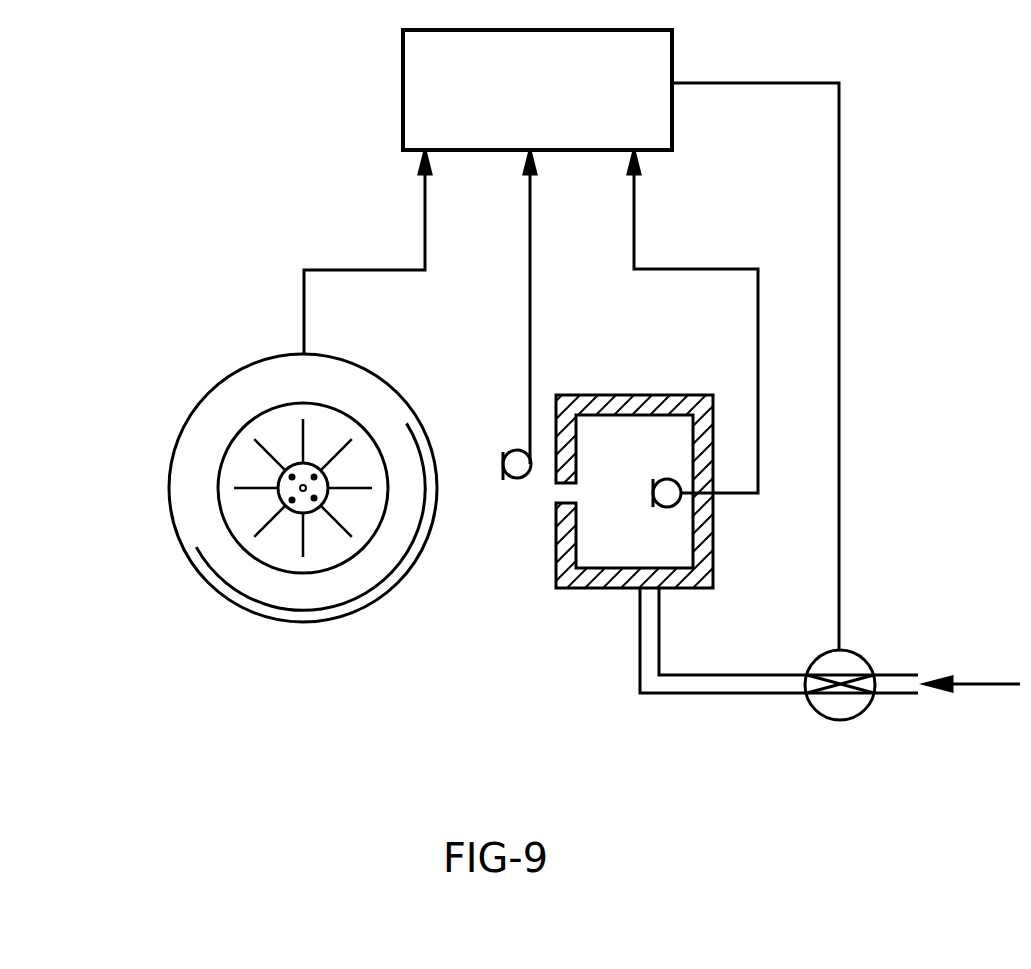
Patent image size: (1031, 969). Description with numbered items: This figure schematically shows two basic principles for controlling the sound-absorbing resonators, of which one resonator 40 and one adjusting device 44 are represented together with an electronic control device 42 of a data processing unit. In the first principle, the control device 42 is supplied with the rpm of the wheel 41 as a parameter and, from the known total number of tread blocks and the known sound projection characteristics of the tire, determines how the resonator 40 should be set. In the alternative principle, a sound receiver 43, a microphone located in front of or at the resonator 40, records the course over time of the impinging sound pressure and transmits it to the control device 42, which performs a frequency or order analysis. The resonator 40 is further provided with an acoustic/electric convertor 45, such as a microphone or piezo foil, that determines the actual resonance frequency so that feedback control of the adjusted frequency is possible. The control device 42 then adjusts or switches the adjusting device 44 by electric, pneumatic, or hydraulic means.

The resonator 40 is at (607, 547).
The wheel 41 is at (256, 368).
The electronic control device 42 is at (428, 80).
The sound receiver 43 is at (510, 480).
The adjusting device 44 is at (838, 706).
The acoustic/electric convertor 45 is at (676, 498).